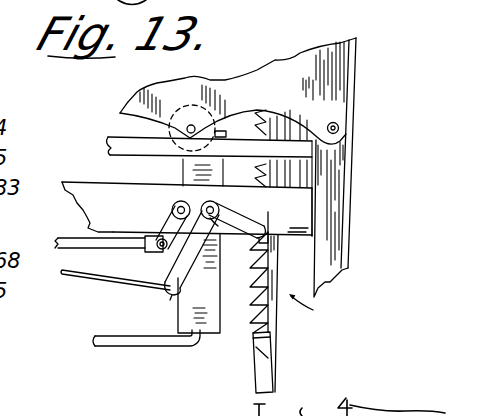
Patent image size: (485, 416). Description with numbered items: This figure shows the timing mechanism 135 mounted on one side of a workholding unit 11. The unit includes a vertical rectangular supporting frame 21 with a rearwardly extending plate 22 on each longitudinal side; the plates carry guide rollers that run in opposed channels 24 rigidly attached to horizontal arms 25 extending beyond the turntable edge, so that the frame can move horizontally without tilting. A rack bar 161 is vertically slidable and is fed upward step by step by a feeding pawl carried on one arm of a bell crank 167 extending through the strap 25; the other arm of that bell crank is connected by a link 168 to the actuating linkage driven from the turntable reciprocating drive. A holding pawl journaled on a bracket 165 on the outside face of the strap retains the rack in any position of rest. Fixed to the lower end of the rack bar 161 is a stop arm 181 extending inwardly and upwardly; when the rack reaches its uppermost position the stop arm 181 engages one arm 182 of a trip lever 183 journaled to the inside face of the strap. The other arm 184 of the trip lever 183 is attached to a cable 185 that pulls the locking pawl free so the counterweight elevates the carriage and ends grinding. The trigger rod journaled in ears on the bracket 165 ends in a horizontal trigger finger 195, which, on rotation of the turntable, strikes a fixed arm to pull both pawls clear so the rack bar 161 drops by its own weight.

The workholding unit 11 is at (356, 38).
The rearwardly extending plate 22 is at (338, 87).
The supporting frame 21 is at (350, 201).
The channel 24 is at (114, 137).
The horizontal arm 25 is at (83, 182).
The bell crank 167 is at (163, 220).
The link 168 is at (64, 237).
The trip lever arm 184 is at (160, 272).
The cable 185 is at (69, 277).
The trip lever arm 182 is at (258, 225).
The trip lever 183 is at (219, 228).
The bracket 165 is at (193, 315).
The trigger finger 195 is at (105, 352).
The rack bar 161 is at (272, 315).
The stop arm 181 is at (274, 354).
The timing mechanism 135 is at (325, 310).